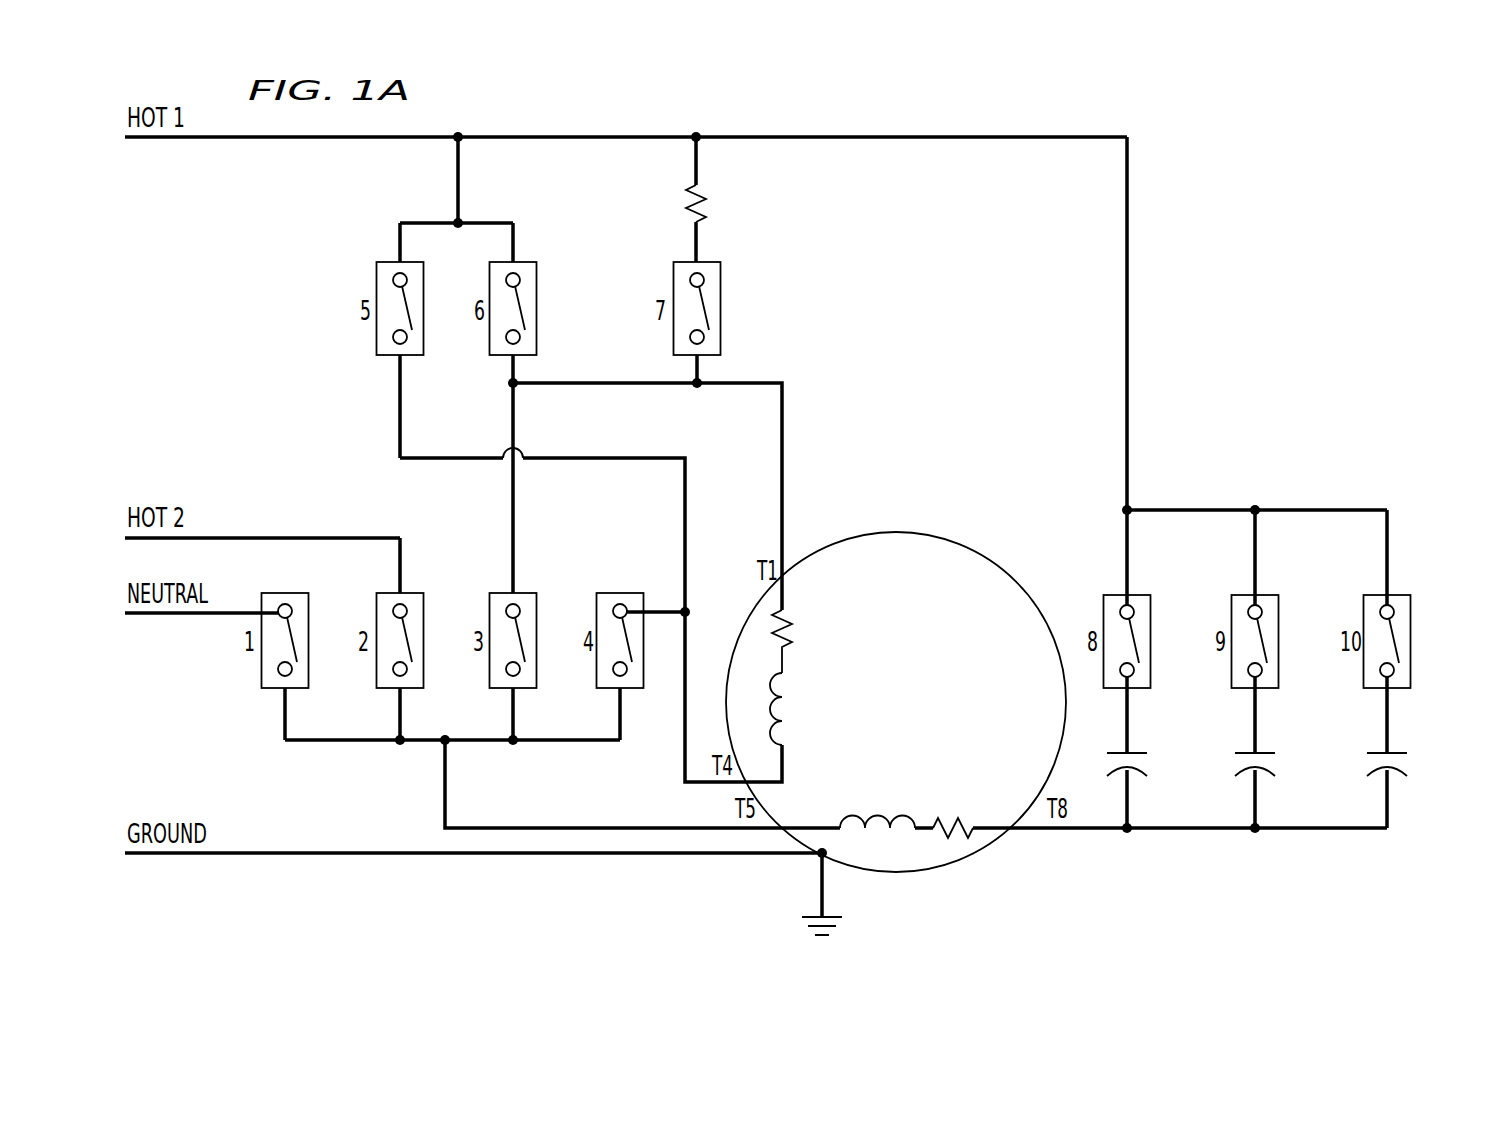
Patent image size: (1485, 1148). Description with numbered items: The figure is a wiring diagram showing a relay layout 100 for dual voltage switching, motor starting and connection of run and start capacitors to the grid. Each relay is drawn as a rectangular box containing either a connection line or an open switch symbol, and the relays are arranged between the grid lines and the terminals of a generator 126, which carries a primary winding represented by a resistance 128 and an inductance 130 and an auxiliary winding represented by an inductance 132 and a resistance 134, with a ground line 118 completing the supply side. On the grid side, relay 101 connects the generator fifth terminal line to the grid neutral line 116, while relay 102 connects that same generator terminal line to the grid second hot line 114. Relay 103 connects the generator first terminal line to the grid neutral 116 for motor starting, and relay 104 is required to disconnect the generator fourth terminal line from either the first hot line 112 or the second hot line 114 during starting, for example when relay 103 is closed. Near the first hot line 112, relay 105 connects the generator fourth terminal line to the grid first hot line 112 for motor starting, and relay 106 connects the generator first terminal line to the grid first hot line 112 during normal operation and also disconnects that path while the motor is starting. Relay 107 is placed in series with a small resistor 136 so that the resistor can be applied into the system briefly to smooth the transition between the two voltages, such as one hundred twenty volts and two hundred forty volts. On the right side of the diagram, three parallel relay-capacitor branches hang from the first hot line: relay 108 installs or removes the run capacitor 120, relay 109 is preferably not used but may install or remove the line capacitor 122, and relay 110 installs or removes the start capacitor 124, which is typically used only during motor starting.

The relay layout 100 is at (1227, 216).
The relay 101 is at (309, 593).
The relay 102 is at (424, 593).
The relay 103 is at (537, 593).
The relay 104 is at (628, 593).
The relay 105 is at (378, 262).
The relay 106 is at (537, 262).
The relay 107 is at (721, 262).
The relay 108 is at (1151, 595).
The relay 109 is at (1279, 595).
The relay 110 is at (1411, 595).
The Hot-1 line 112 is at (158, 150).
The Hot-2 line 114 is at (220, 535).
The neutral line 116 is at (158, 627).
The ground line 118 is at (157, 867).
The run capacitor 120 is at (1142, 760).
The line capacitor 122 is at (1270, 760).
The start capacitor 124 is at (1402, 760).
The generator 126 is at (907, 532).
The primary winding resistance 128 is at (770, 625).
The primary winding inductance 130 is at (763, 694).
The auxiliary winding inductance 132 is at (876, 835).
The auxiliary winding resistance 134 is at (956, 842).
The small resistor 136 is at (704, 203).